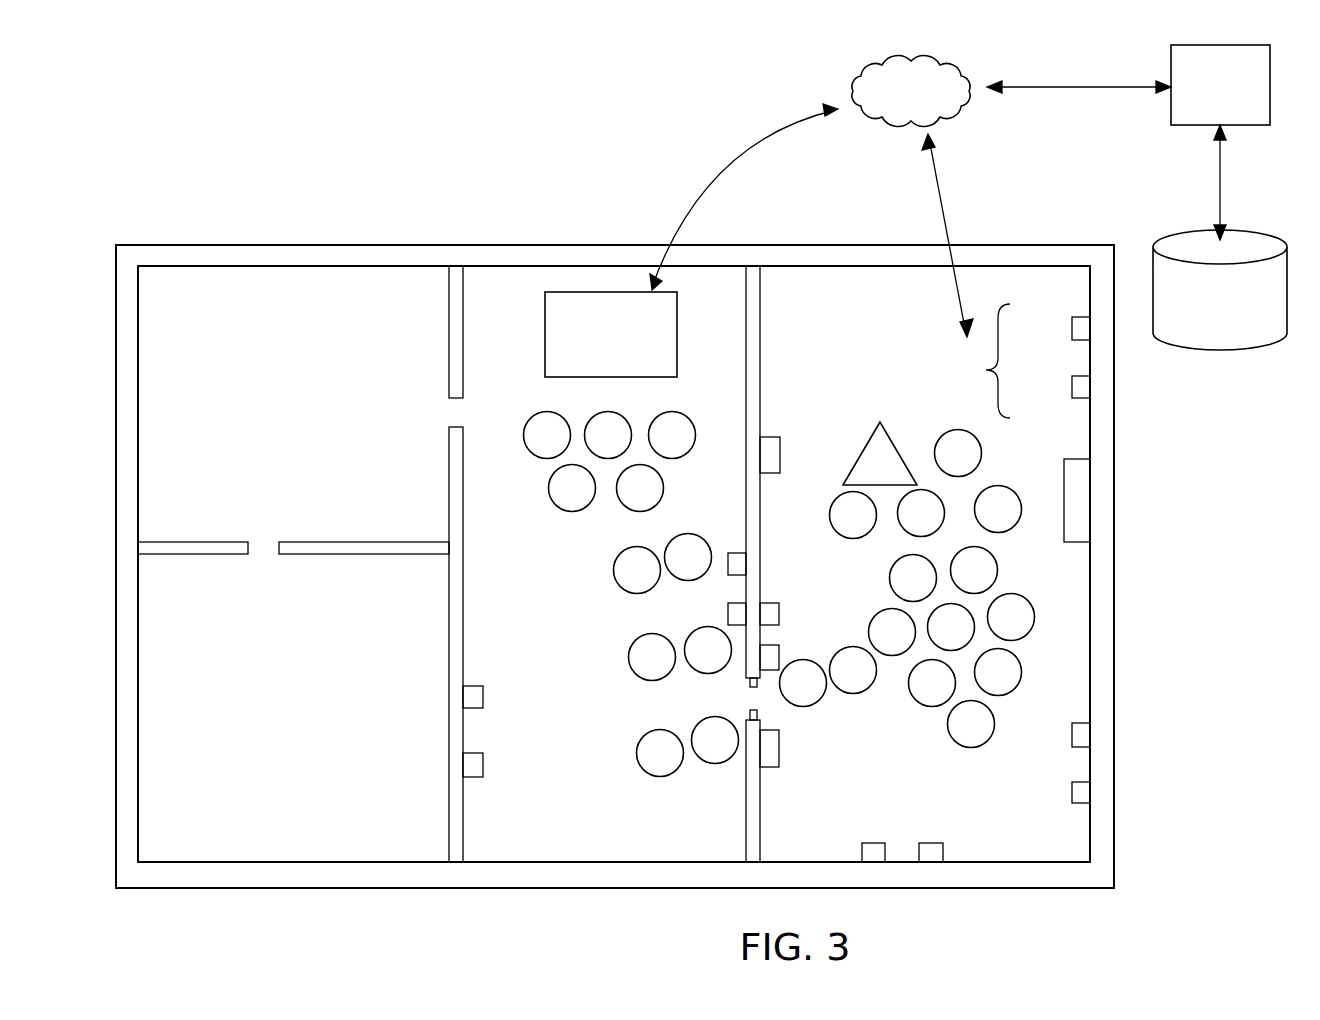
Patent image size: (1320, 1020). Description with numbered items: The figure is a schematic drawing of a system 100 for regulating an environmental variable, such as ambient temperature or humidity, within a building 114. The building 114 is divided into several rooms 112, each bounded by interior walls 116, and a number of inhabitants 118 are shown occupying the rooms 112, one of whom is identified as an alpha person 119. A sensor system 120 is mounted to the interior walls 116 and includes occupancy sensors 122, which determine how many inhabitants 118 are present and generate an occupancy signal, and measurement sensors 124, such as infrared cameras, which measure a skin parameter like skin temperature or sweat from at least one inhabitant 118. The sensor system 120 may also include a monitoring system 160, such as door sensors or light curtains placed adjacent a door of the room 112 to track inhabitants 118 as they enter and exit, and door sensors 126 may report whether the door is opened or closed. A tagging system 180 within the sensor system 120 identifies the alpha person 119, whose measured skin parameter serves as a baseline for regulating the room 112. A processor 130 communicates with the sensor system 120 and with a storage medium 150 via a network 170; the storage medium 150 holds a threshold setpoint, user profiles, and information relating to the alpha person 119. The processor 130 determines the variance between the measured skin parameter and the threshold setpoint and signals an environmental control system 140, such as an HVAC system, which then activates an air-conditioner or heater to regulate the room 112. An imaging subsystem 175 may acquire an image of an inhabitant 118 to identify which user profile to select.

The system 100 is at (208, 156).
The room 112 is at (273, 397).
The building 114 is at (1114, 486).
The interior walls 116 is at (761, 358).
The inhabitants 118 is at (533, 448).
The alpha person 119 is at (863, 480).
The sensor system 120 is at (975, 361).
The occupancy sensors 122 is at (1080, 326).
The measurement sensors 124 is at (1080, 383).
The door sensor 126 is at (748, 683).
The processor 130 is at (1203, 102).
The environmental control system 140 is at (594, 339).
The storage medium 150 is at (1210, 320).
The monitoring system 160 is at (768, 745).
The network 170 is at (905, 105).
The device 175 is at (1072, 478).
The tagging system 180 is at (781, 450).